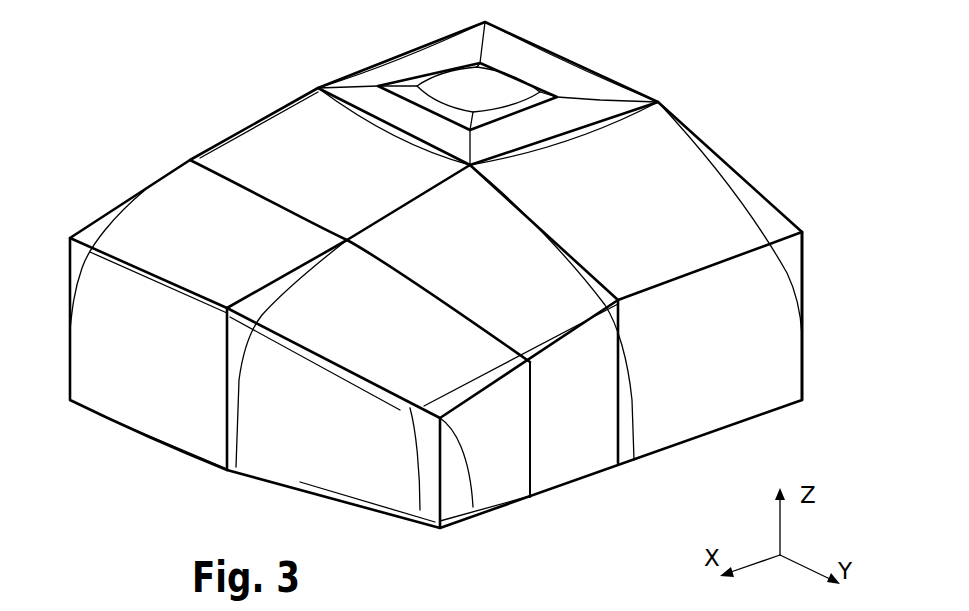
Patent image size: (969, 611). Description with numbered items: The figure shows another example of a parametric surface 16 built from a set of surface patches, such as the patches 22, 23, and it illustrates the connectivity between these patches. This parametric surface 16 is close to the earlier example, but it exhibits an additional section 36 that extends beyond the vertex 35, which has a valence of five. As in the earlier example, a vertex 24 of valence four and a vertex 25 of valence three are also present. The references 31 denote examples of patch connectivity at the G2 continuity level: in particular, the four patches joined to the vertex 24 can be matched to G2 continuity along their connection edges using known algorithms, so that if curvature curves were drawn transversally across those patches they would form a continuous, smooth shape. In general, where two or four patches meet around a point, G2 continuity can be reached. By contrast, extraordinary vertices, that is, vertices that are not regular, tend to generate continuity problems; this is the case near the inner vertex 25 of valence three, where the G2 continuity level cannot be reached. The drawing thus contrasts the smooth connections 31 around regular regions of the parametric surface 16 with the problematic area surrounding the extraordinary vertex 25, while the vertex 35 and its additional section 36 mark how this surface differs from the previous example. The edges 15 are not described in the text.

The edge 15 is at (780, 210).
The parametric surface 16 is at (692, 197).
The surface patch 22 is at (165, 222).
The surface patch 23 is at (267, 152).
The vertex 24 is at (344, 250).
The vertex 25 is at (482, 514).
The patches connectivity 31 is at (313, 222).
The vertex 35 is at (468, 170).
The additional section 36 is at (607, 188).